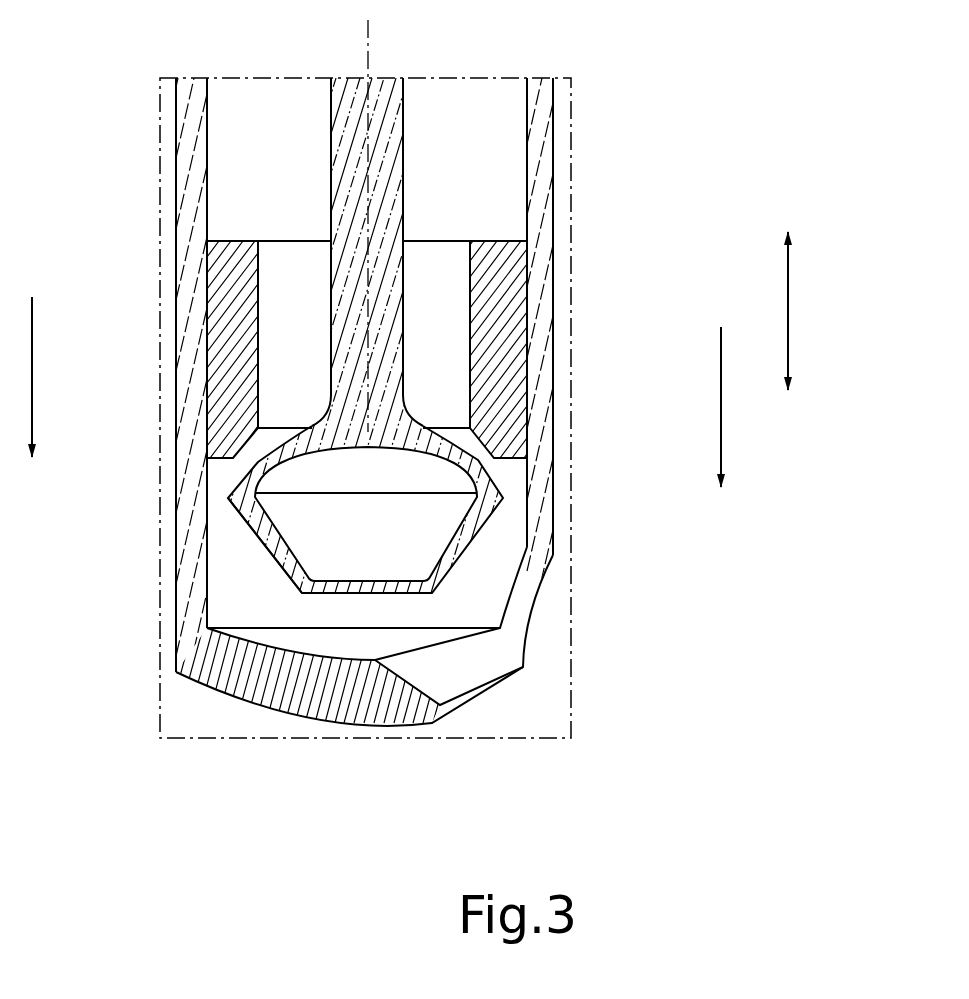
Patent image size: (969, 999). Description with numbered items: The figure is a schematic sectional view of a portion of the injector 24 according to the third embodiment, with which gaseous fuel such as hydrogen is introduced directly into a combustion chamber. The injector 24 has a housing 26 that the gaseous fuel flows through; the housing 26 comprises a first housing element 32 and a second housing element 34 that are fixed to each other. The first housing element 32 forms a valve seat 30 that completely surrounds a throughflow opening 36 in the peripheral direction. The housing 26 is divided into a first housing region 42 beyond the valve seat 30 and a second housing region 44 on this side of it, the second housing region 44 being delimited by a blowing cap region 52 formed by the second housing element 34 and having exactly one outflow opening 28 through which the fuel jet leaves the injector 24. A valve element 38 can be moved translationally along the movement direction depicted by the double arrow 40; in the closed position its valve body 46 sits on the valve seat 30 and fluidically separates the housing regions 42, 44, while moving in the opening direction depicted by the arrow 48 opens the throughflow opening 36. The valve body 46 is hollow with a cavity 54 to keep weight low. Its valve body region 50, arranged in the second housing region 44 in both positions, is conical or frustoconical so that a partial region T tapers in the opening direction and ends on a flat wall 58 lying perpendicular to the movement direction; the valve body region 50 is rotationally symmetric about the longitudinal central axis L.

The injector 24 is at (549, 90).
The housing 26 is at (545, 188).
The outflow opening 28 is at (504, 658).
The valve seat 30 is at (268, 447).
The first housing element 32 is at (506, 390).
The second housing element 34 is at (185, 146).
The throughflow opening 36 is at (434, 422).
The valve element 38 is at (344, 90).
The double arrow 40 is at (787, 277).
The first housing region 42 is at (282, 140).
The second housing region 44 is at (236, 570).
The valve body 46 is at (488, 478).
The arrow 48 is at (33, 375).
The valve body region 50 is at (283, 578).
The blowing cap region 52 is at (294, 697).
The cavity 54 is at (397, 545).
The wall 58 is at (386, 592).
The longitudinal central axis L is at (369, 141).
The partial region T is at (486, 548).